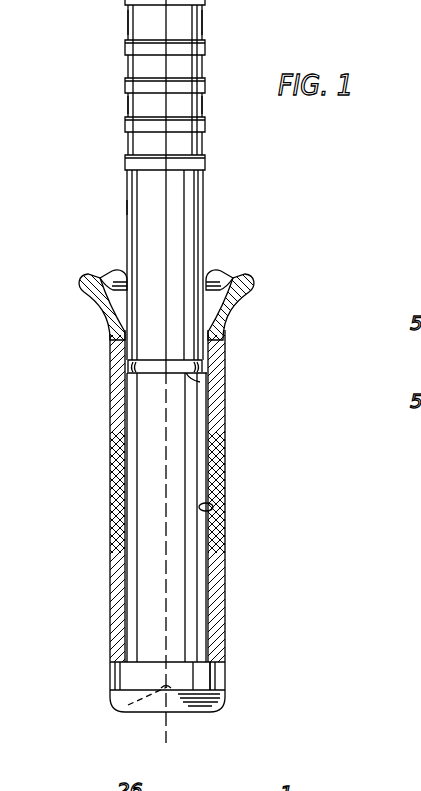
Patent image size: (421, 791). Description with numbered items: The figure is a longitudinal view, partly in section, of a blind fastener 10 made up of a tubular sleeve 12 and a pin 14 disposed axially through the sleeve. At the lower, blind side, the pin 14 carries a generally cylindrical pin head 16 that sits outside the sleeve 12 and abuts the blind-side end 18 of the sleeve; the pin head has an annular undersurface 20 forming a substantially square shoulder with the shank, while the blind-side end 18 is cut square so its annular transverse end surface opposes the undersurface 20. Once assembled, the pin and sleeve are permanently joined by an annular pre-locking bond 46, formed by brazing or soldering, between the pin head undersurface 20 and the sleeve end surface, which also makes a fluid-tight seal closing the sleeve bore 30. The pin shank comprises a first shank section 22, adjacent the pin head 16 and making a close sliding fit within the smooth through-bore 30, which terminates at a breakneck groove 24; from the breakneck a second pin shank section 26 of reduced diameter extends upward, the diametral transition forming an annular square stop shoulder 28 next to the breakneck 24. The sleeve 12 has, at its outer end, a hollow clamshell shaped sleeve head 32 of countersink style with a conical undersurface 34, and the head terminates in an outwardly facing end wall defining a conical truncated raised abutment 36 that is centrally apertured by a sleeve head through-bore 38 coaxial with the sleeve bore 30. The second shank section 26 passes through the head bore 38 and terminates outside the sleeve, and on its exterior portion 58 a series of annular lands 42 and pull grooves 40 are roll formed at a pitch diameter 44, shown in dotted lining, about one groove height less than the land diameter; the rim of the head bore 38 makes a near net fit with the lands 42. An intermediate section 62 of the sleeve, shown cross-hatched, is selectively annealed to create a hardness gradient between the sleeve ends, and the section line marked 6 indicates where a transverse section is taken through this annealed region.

The blind fastener 10 is at (264, 300).
The tubular sleeve 12 is at (224, 466).
The pin 14 is at (190, 445).
The pin head 16 is at (225, 698).
The blind-side end of the sleeve 18 is at (216, 670).
The annular undersurface of the pin head 20 is at (120, 660).
The first shank section 22 is at (223, 617).
The breakneck groove 24 is at (203, 363).
The second pin shank section 26 is at (203, 205).
The stop shoulder 28 is at (200, 383).
The sleeve through-bore 30 is at (212, 508).
The sleeve head 32 is at (97, 298).
The conical undersurface 34 is at (93, 314).
The raised abutment 36 is at (112, 272).
The sleeve head through-bore 38 is at (203, 258).
The pull grooves 40 is at (125, 30).
The annular lands 42 is at (205, 45).
The pitch diameter 44 is at (125, 108).
The pre-locking bond 46 is at (212, 655).
The exterior portion of the second shank section 58 is at (122, 208).
The intermediate annealed section of the sleeve 62 is at (100, 537).
The section line 6- 6 is at (215, 557).